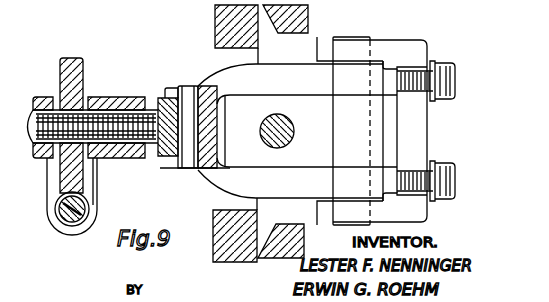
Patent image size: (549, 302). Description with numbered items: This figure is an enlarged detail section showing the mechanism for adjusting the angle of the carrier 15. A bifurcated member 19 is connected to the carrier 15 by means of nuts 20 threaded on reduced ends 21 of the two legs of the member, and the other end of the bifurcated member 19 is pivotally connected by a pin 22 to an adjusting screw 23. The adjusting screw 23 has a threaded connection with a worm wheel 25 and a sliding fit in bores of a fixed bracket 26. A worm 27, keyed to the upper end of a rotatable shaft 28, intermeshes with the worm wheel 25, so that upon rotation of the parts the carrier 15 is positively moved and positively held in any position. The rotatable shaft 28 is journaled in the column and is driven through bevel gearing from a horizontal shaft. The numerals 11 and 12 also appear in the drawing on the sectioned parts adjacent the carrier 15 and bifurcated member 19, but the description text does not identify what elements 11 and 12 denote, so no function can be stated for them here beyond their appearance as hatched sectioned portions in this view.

The mounting boss 11 is at (226, 22).
The end plate 12 is at (316, 44).
The carrier 15 is at (413, 49).
The bifurcated member 19 is at (219, 72).
The nuts 20 is at (435, 63).
The reduced ends 21 is at (421, 96).
The pin 22 is at (190, 86).
The adjusting screw 23 is at (161, 112).
The worm wheel 25 is at (89, 62).
The fixed bracket 26 is at (126, 158).
The worm 27 is at (72, 230).
The rotatable shaft 28 is at (57, 208).